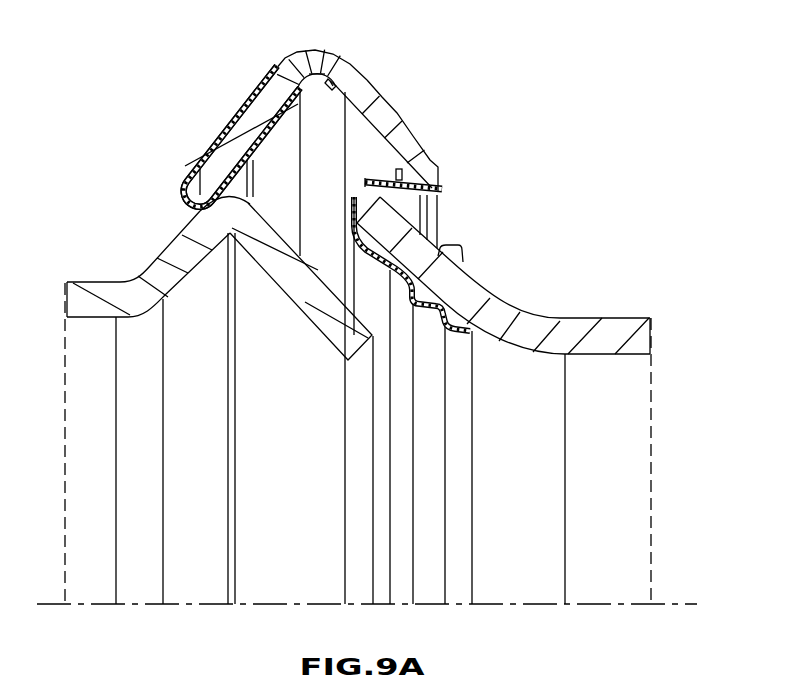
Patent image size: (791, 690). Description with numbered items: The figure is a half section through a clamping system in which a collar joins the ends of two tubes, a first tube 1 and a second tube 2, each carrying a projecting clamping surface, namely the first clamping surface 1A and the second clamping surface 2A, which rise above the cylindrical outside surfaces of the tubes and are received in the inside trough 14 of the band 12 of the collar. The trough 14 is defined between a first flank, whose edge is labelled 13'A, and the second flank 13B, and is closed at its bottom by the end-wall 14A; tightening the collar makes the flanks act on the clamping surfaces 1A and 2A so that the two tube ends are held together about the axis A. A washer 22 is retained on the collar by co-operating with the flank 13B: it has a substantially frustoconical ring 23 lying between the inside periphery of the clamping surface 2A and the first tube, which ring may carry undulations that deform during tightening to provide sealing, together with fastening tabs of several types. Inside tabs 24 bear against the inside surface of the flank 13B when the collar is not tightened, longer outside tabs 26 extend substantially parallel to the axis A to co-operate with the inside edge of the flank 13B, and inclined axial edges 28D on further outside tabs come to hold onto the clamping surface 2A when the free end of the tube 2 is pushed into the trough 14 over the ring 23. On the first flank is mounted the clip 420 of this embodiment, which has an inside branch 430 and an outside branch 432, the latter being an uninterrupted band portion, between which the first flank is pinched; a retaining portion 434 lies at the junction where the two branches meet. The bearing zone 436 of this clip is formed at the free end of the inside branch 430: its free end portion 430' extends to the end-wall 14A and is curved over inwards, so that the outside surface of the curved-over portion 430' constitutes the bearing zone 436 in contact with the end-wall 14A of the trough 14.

The first tube 1 is at (75, 276).
The first clamping surface 1A is at (194, 252).
The second tube 2 is at (584, 304).
The second clamping surface 2A is at (444, 270).
The band 12 is at (304, 44).
The second flank 13B is at (384, 108).
The folded end of clip 13'A is at (162, 190).
The inside trough 14 is at (354, 86).
The end-wall of the trough 14A is at (283, 66).
The washer 22 is at (341, 200).
The frustoconical ring 23 is at (397, 268).
The inside tabs 24 is at (394, 177).
The outside tabs of a first type 26 is at (462, 252).
The inclined axial edges 28D is at (410, 194).
The clip 420 is at (214, 92).
The inside branch 430 is at (250, 144).
The free end portion of the inside branch 430' is at (361, 54).
The outside branch 432 is at (223, 126).
The retaining portion 434 is at (193, 200).
The bearing zone 436 is at (321, 72).
The axis A is at (688, 604).